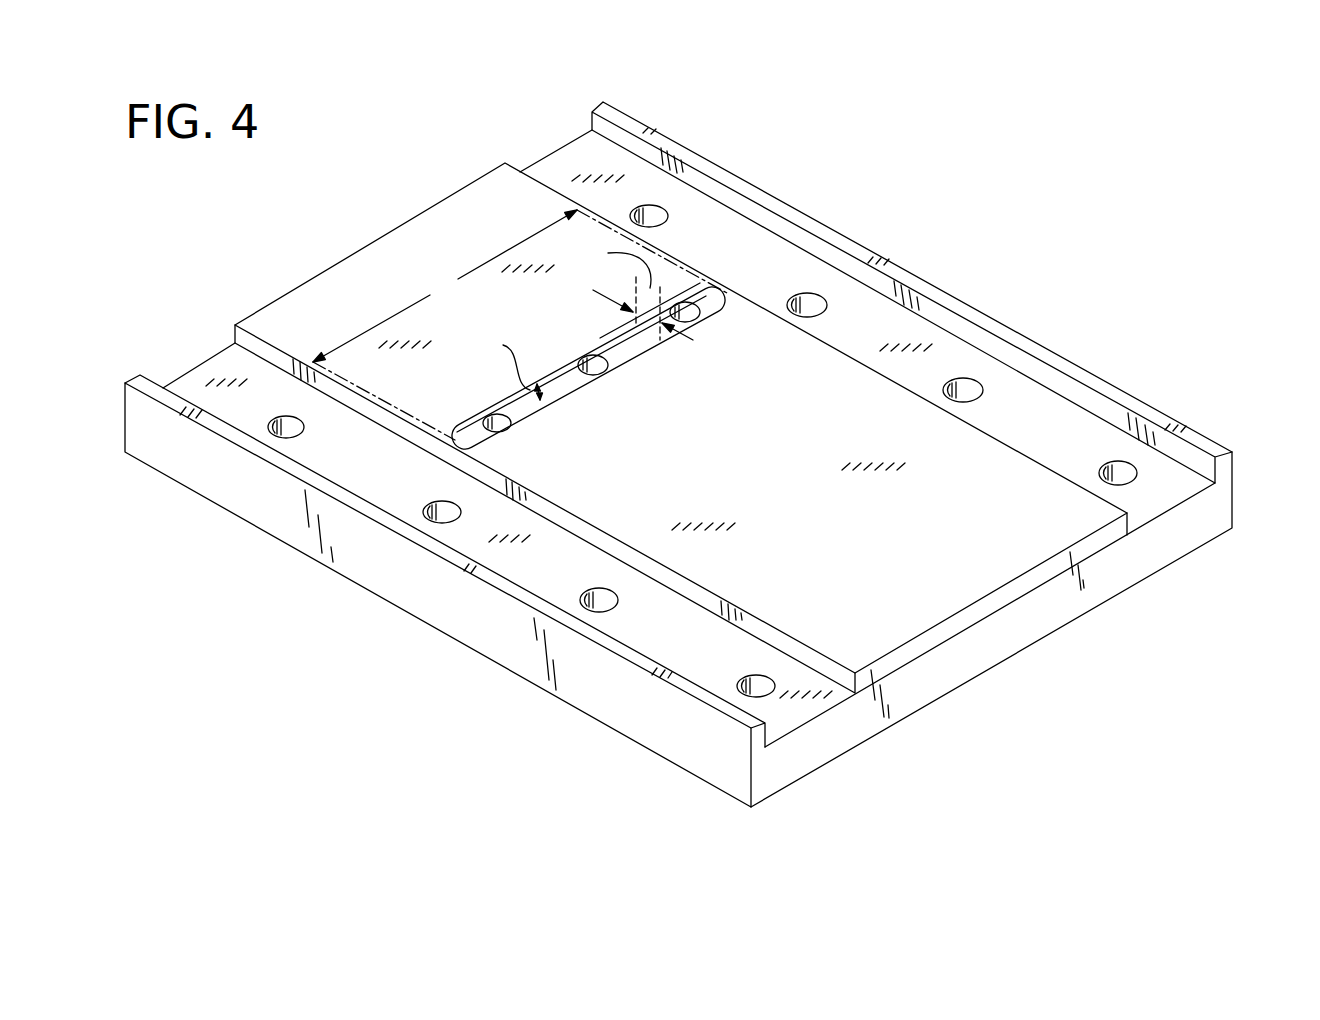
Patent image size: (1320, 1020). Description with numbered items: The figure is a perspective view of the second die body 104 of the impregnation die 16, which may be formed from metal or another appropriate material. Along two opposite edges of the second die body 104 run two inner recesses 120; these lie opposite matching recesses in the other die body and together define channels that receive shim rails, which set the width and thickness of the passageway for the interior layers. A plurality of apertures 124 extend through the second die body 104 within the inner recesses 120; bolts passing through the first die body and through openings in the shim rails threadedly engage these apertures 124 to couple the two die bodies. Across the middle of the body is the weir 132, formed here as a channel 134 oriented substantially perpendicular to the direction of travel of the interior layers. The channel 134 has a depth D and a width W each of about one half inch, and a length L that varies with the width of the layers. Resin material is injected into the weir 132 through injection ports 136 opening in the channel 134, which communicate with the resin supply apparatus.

The impregnation die 16 is at (1046, 242).
The second die body 104 is at (1002, 632).
The inner recesses 120 is at (1147, 512).
The apertures 124 is at (803, 297).
The weir 132 is at (627, 362).
The channel 134 is at (603, 340).
The injection ports 136 is at (703, 315).